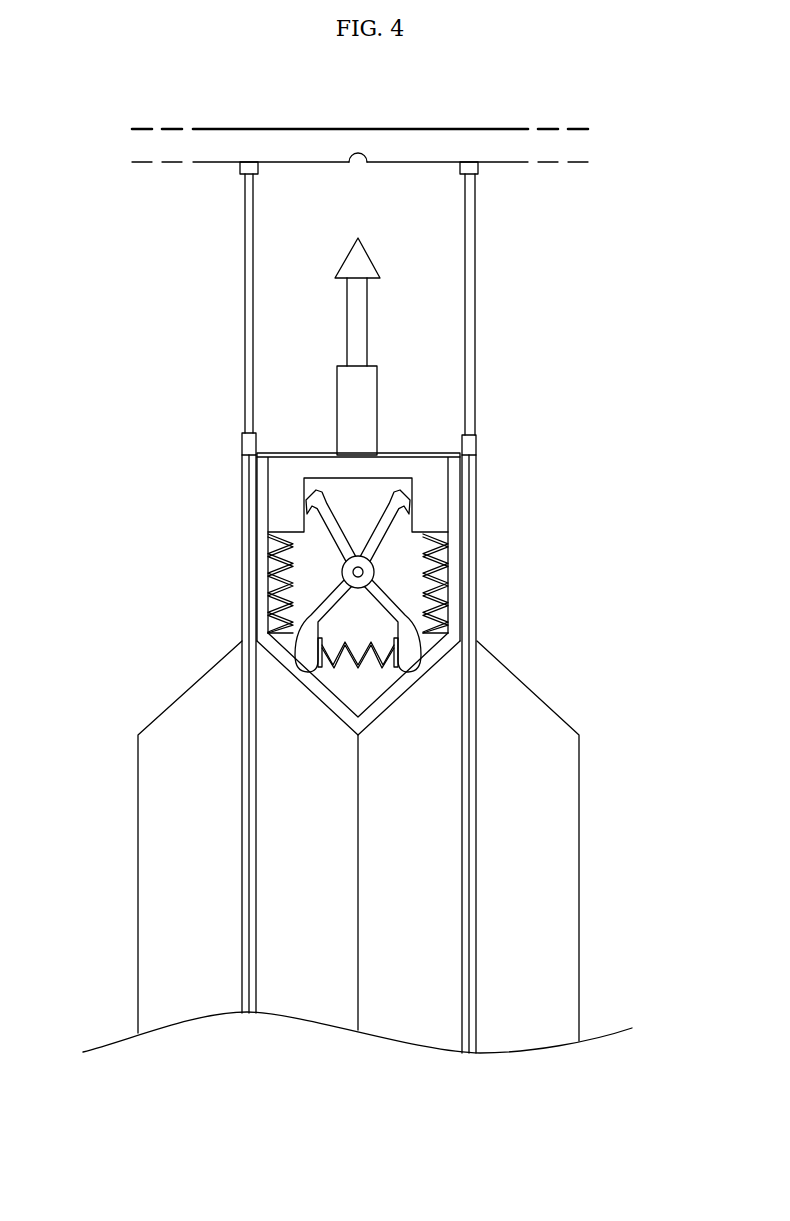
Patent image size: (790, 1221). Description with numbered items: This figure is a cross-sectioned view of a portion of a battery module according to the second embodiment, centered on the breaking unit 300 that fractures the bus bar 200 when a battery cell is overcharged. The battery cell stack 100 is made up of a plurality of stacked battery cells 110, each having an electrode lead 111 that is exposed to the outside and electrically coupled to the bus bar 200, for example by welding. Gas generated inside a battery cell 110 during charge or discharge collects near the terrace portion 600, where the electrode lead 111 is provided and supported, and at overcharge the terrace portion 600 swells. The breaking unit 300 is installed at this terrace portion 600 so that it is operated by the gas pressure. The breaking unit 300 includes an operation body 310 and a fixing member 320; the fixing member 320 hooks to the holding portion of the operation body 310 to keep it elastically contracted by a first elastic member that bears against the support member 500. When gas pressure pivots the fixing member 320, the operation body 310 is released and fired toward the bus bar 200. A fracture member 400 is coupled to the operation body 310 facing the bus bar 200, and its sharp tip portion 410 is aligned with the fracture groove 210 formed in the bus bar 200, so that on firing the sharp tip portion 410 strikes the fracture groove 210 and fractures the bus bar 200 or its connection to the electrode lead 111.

The battery cell stack 100 is at (597, 703).
The battery cell 110 is at (138, 823).
The electrode lead 111 is at (477, 278).
The bus bar 200 is at (442, 129).
The fracture groove 210 is at (355, 168).
The breaking unit 300 is at (314, 323).
The operation body 310 is at (446, 389).
The fixing member 320 is at (398, 602).
The fracture member 400 is at (367, 318).
The sharp tip portion 410 is at (360, 236).
The support member 500 is at (458, 522).
The terrace portion 600 is at (520, 642).